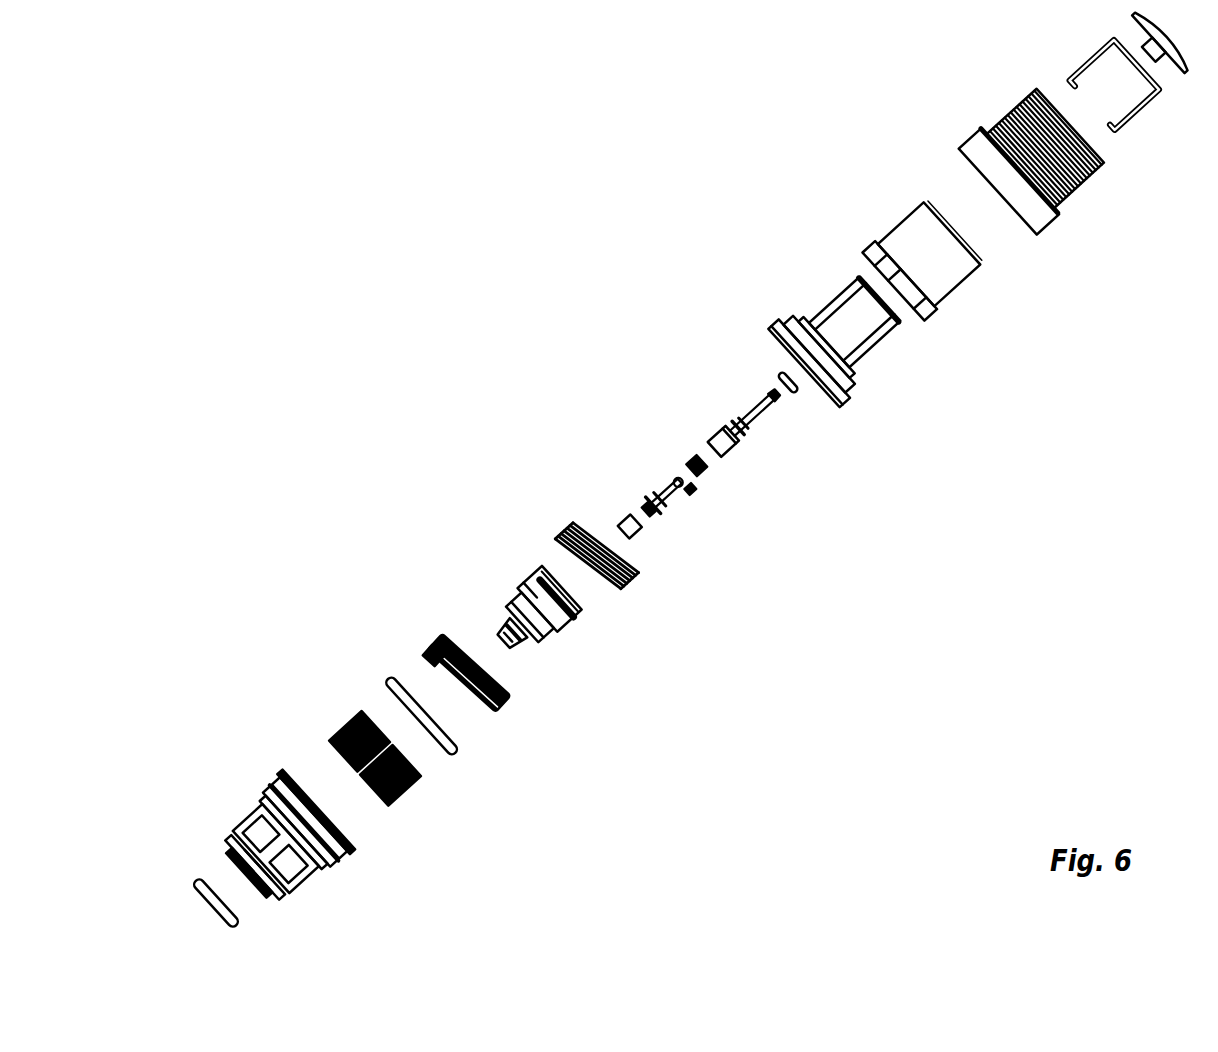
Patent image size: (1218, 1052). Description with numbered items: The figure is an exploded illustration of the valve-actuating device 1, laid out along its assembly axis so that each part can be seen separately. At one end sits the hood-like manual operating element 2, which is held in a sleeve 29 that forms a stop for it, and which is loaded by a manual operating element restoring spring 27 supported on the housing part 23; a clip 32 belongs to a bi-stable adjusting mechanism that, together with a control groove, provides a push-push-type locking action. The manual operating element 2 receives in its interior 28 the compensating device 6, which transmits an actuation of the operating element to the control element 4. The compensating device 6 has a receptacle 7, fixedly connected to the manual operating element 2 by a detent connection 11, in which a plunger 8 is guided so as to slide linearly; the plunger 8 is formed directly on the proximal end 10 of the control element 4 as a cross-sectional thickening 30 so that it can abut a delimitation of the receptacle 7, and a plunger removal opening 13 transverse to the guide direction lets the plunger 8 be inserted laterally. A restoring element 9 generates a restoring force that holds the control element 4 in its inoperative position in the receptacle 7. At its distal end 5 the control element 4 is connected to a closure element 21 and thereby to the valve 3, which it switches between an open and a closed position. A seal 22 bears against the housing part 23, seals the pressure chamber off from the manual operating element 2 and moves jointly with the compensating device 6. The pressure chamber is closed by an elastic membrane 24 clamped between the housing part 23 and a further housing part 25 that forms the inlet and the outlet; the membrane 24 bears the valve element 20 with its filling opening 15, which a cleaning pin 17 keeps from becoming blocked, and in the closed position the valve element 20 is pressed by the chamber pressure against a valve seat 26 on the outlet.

The valve-actuating device 1 is at (276, 297).
The manual operating element 2 is at (946, 282).
The valve 3 is at (572, 779).
The control element 4 is at (674, 500).
The distal end 5 is at (638, 493).
The compensating device 6 is at (684, 387).
The receptacle 7 is at (704, 448).
The plunger 8 is at (692, 488).
The restoring element 9 is at (702, 469).
The proximal end 10 is at (662, 475).
The detent connection 11 is at (756, 377).
The plunger removal opening 13 is at (737, 453).
The filling opening 15 is at (495, 614).
The cleaning pin 17 is at (532, 581).
The valve element 20 is at (528, 658).
The closure element 21 is at (617, 519).
The seal 22 is at (794, 393).
The housing part 23 is at (866, 340).
The elastic membrane 24 is at (416, 623).
The further housing part 25 is at (302, 862).
The valve seat 26 is at (338, 811).
The manual operating element restoring spring 27 is at (571, 527).
The interior 28 is at (909, 324).
The sleeve 29 is at (1055, 194).
The cross-sectional thickening 30 is at (677, 478).
The clip 32 is at (1141, 114).